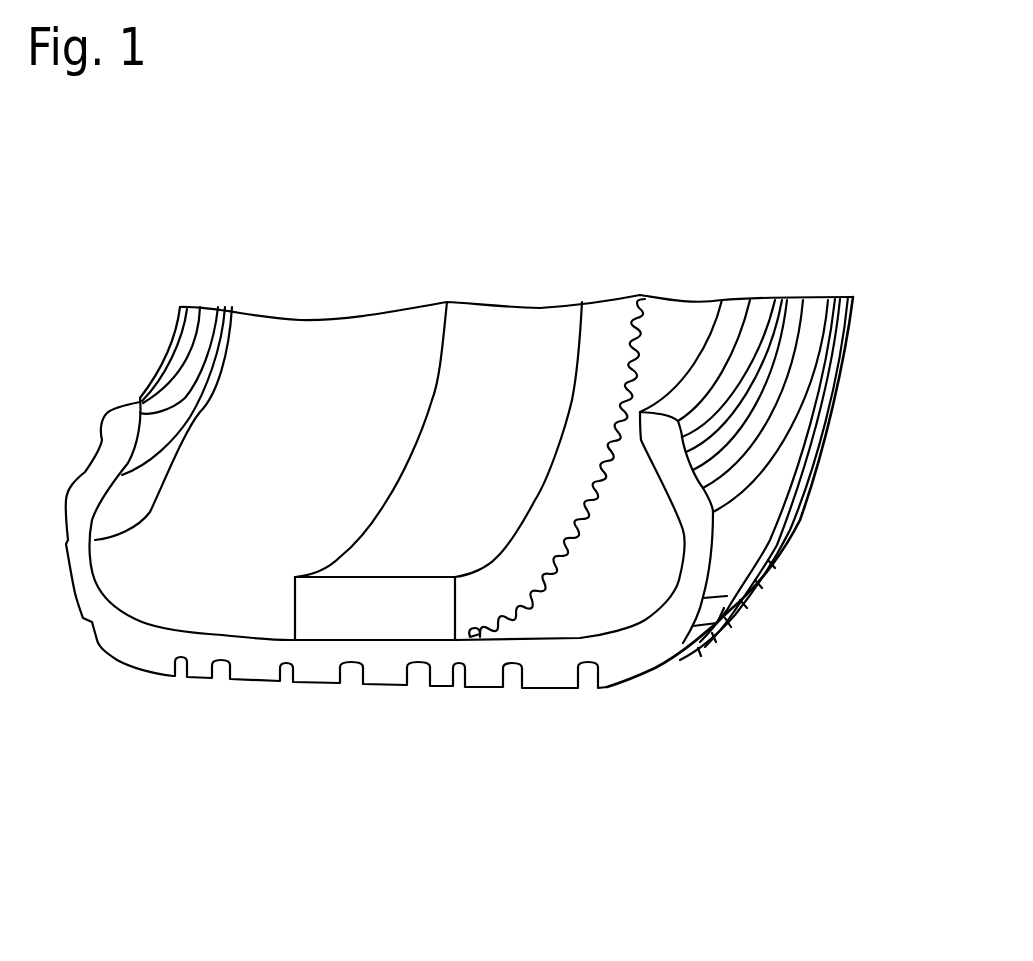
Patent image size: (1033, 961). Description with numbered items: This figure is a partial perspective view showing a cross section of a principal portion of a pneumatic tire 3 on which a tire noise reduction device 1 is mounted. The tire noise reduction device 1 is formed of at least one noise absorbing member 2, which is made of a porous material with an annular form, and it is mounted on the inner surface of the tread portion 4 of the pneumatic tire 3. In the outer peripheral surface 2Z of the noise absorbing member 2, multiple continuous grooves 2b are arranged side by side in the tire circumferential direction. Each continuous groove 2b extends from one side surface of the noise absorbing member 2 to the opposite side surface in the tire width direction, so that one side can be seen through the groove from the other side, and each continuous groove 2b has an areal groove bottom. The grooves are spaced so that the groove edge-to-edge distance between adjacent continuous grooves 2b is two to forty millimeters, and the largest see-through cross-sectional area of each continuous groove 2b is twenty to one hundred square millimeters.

The tire noise reduction device 1 is at (459, 491).
The noise absorbing member 2 is at (533, 307).
The outer peripheral surface 2Z is at (663, 313).
The continuous grooves 2b is at (558, 580).
The pneumatic tire 3 is at (800, 507).
The tread portion 4 is at (387, 673).